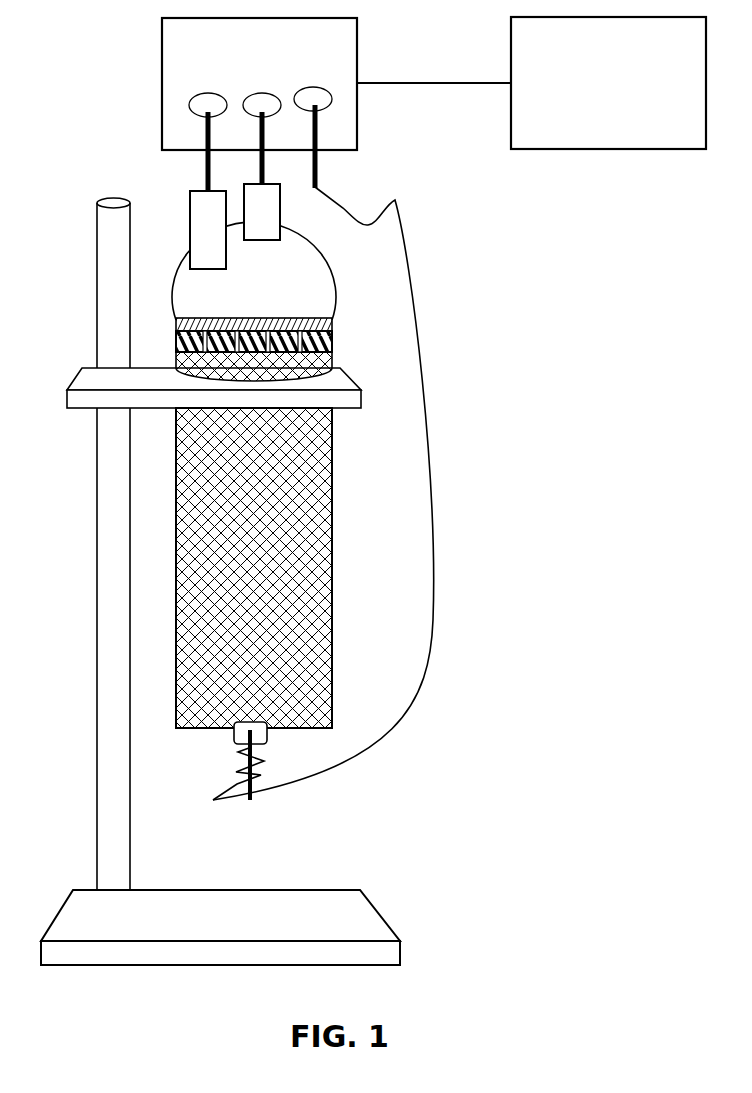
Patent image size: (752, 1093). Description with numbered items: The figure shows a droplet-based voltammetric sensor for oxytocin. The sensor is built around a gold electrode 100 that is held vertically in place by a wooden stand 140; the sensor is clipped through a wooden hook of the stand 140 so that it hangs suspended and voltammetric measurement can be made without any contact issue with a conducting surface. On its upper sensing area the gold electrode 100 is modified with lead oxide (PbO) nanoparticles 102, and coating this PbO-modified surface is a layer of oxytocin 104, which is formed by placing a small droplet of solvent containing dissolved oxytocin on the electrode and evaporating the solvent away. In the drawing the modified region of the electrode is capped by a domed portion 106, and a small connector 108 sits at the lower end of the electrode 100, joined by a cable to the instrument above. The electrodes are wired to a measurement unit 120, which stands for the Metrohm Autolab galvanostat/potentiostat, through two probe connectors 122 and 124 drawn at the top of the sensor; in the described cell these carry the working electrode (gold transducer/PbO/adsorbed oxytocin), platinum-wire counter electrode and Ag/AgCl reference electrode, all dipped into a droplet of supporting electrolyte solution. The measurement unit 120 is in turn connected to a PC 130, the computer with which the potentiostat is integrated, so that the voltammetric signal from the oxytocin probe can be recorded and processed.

The gold electrode 100 is at (325, 605).
The lead oxide nanoparticles 102 is at (333, 341).
The layer of oxytocin 104 is at (332, 321).
The cap / dome cover 106 is at (305, 290).
The bottom sensor connector 108 is at (260, 735).
The measurement controller unit 120 is at (259, 84).
The first sensor probe 122 is at (200, 231).
The second sensor probe 124 is at (272, 216).
The PC computer 130 is at (531, 83).
The wooden stand 140 is at (110, 855).